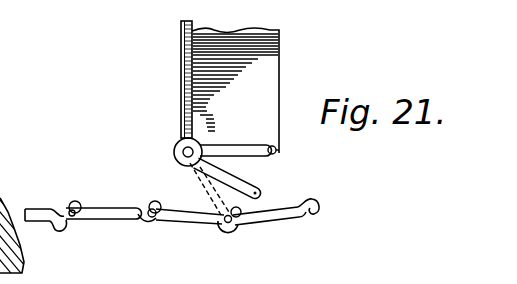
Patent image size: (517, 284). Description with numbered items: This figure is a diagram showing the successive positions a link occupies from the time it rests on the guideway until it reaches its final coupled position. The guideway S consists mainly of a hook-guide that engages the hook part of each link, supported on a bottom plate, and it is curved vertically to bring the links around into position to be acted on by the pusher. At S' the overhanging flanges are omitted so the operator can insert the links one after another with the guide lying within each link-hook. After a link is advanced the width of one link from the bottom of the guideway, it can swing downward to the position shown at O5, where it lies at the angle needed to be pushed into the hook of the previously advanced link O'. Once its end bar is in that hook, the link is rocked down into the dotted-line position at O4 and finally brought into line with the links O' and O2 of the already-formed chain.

The guideway S is at (176, 79).
The link-insertion point of guideway S' is at (251, 90).
The link of coupled chain O2 is at (107, 232).
The link position after swinging down O5 is at (198, 190).
The previously coupled link O' is at (190, 229).
The rocked-down link position O4 is at (273, 217).